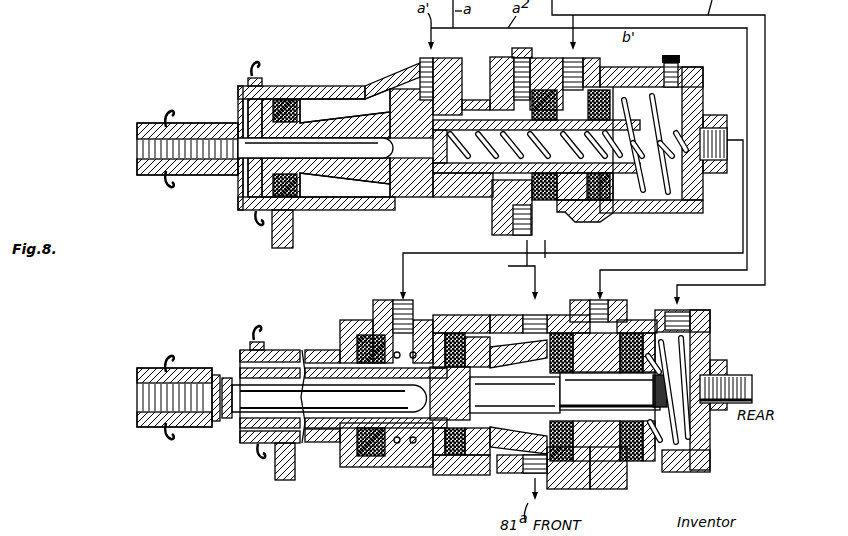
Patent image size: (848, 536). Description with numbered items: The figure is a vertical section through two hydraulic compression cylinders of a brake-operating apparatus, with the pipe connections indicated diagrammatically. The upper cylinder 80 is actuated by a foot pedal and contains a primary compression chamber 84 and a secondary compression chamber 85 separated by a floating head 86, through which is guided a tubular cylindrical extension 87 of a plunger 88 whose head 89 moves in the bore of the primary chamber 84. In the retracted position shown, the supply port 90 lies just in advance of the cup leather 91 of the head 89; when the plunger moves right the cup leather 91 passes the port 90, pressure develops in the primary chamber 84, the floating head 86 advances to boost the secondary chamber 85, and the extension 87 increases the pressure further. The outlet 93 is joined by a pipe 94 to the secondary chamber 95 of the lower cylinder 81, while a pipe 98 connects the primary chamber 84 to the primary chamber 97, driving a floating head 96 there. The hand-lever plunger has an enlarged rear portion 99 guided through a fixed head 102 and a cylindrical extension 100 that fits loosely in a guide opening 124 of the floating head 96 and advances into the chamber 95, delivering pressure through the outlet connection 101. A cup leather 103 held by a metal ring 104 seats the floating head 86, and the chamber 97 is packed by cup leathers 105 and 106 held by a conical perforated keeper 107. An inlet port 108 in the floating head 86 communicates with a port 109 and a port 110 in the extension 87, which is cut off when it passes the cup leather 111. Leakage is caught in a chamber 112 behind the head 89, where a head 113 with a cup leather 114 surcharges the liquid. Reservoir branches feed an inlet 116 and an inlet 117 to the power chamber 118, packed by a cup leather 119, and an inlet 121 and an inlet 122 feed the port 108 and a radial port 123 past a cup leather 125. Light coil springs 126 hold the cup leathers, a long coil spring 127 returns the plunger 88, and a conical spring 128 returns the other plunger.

The cylinder 80 is at (628, 68).
The cylinder 81 is at (505, 497).
The primary compression chamber 84 is at (478, 175).
The secondary compression chamber 85 is at (673, 110).
The floating head 86 is at (571, 215).
The cylindrical extension 87 is at (445, 197).
The plunger 88 is at (452, 115).
The head 89 is at (410, 88).
The supply port 90 is at (440, 60).
The cup leather 91 is at (393, 210).
The outlet 93 is at (710, 116).
The pipe 94 is at (743, 190).
The secondary chamber 95 is at (675, 345).
The floating head 96 is at (590, 489).
The primary chamber 97 is at (503, 333).
The pipe 98 is at (511, 270).
The rear portion of enlarged diameter 99 is at (445, 316).
The cylindrical extension 100 is at (613, 391).
The outlet connection 101 is at (738, 380).
The fixed head 102 is at (408, 473).
The cup leather 103 is at (542, 58).
The metal ring 104 is at (545, 286).
The cup leather 105 is at (462, 475).
The cup leather 106 is at (553, 473).
The conical perforated keeper 107 is at (525, 360).
The inlet port 108 is at (583, 60).
The port 109 is at (527, 145).
The port 110 is at (620, 190).
The cup leather 111 is at (604, 200).
The chamber 112 is at (343, 192).
The head 113 is at (262, 84).
The cup leather 114 is at (284, 100).
The inlet 116 is at (422, 58).
The inlet 117 is at (397, 300).
The power chamber 118 is at (383, 467).
The cup leather 119 is at (360, 340).
The inlet 121 is at (545, 90).
The inlet 122 is at (596, 300).
The radial port 123 is at (607, 363).
The guide opening 124 is at (610, 470).
The cup leather 125 is at (653, 323).
The light coil springs 126 is at (685, 78).
The long light coil spring 127 is at (668, 190).
The conical light coil spring 128 is at (712, 442).